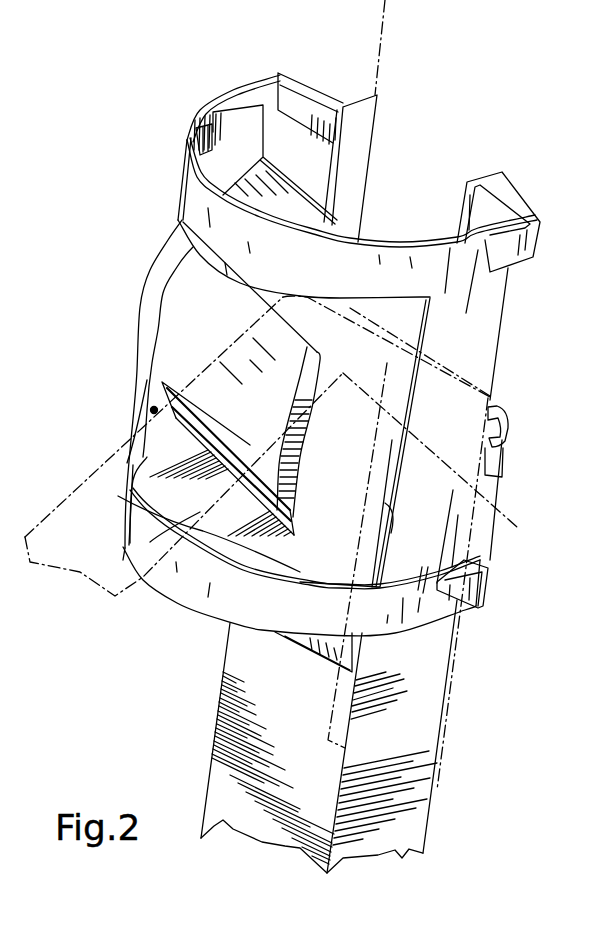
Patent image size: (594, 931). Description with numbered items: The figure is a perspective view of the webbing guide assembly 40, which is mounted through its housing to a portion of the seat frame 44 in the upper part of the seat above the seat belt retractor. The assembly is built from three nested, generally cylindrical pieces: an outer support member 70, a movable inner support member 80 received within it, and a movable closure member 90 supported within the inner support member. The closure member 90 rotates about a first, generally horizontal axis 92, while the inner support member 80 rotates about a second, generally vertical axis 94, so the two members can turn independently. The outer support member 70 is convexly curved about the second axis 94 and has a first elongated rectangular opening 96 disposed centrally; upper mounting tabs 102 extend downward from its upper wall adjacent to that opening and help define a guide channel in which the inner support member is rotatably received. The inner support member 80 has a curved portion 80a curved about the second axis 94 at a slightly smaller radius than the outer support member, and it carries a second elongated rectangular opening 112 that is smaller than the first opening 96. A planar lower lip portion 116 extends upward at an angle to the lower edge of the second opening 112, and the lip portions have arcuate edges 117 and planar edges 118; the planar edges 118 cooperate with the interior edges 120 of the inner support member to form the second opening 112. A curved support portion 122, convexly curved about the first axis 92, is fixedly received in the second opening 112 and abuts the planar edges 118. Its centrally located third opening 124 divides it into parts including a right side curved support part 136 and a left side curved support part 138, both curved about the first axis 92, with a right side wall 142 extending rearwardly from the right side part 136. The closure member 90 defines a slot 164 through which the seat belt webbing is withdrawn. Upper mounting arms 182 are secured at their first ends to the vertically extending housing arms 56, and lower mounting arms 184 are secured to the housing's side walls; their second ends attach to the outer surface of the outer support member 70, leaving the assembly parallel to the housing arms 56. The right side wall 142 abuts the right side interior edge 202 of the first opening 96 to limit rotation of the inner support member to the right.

The webbing guide assembly 40 is at (124, 178).
The seat frame 44 is at (242, 667).
The housing arms 56 is at (350, 163).
The outer support member 70 is at (193, 200).
The inner support member 80 is at (220, 553).
The curved portion 80a is at (270, 558).
The closure member 90 is at (219, 384).
The first axis 92 is at (520, 530).
The second axis 94 is at (390, 5).
The first elongated rectangular opening 96 is at (385, 513).
The upper mounting tabs 102 is at (223, 118).
The second elongated rectangular opening 112 is at (293, 528).
The lower lip portion 116 is at (145, 462).
The arcuate edges 117 is at (173, 495).
The planar edges 118 is at (178, 485).
The interior edges 120 is at (313, 428).
The curved support portion 122 is at (110, 397).
The third opening 124 is at (137, 375).
The right side curved support part 136 is at (298, 445).
The left side curved support part 138 is at (167, 270).
The right side wall 142 is at (318, 400).
The slot 164 is at (154, 410).
The upper mounting arms 182 is at (300, 110).
The lower mounting arms 184 is at (473, 607).
The right side interior edge 202 is at (493, 400).